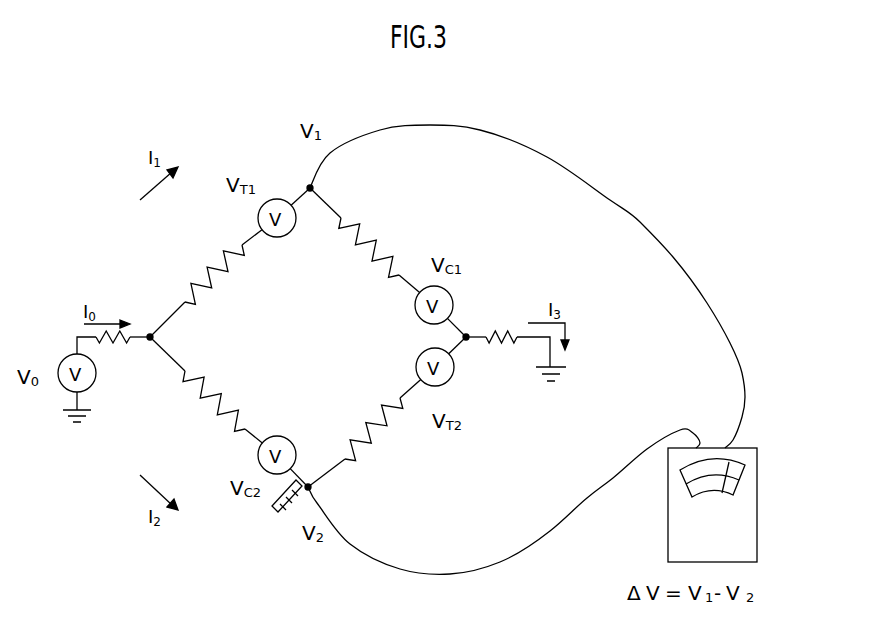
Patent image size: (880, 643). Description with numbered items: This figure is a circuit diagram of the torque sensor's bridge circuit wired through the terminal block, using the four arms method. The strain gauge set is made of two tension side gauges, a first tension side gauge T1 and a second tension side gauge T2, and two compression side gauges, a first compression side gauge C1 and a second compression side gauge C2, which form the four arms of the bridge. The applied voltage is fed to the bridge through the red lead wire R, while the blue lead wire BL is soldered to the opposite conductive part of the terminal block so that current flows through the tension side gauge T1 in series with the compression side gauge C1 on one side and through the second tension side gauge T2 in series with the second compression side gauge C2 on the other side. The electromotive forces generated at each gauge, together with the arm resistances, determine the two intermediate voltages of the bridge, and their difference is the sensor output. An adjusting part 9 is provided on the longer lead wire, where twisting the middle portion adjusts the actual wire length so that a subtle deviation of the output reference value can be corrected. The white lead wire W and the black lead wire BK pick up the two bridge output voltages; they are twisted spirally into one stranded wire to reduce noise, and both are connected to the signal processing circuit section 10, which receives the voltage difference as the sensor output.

The adjusting part 9 is at (272, 512).
The signal processing circuit section 10 is at (668, 537).
The red lead wire R is at (113, 349).
The first tension side gauge T1 is at (195, 274).
The second tension side gauge T2 is at (374, 448).
The first compression side gauge C1 is at (372, 231).
The second compression side gauge C2 is at (209, 414).
The black lead wire BK is at (339, 187).
The blue lead wire BL is at (501, 350).
The white lead wire W is at (504, 508).